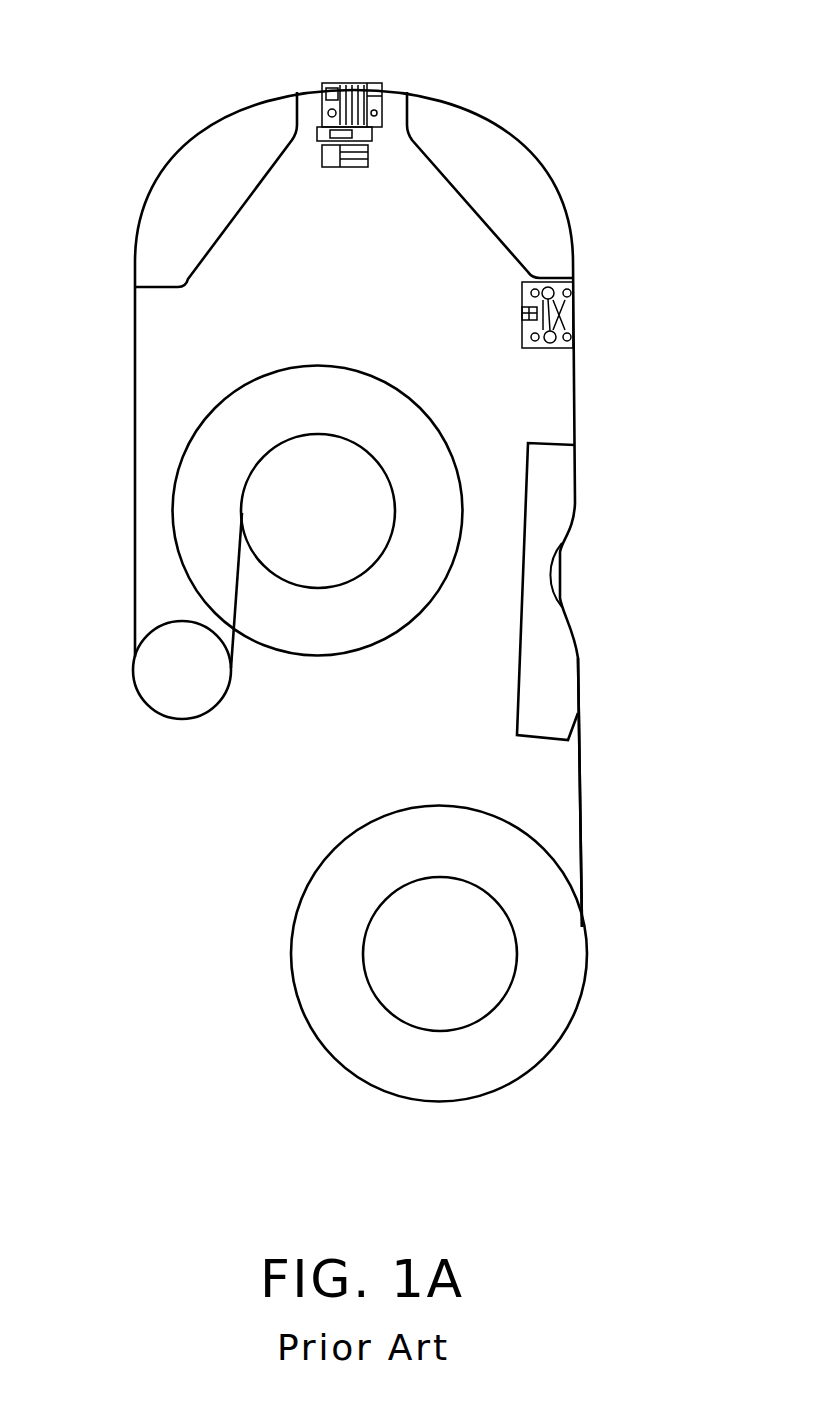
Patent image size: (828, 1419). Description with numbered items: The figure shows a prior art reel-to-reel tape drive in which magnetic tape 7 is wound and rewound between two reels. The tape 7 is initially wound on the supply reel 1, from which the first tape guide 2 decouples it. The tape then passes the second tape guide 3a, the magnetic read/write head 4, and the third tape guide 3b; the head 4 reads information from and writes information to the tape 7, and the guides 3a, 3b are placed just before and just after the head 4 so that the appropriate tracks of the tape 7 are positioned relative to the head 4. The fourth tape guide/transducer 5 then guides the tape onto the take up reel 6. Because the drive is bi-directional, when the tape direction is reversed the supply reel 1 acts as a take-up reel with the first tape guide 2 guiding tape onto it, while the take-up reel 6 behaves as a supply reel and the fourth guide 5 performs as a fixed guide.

The supply reel 1 is at (528, 1018).
The first tape guide 2 is at (545, 672).
The second tape guide 3a is at (515, 182).
The third tape guide 3b is at (187, 197).
The magnetic read/write head 4 is at (338, 82).
The fourth tape guide/transducer 5 is at (167, 680).
The take up reel 6 is at (198, 487).
The tape 7 is at (586, 816).